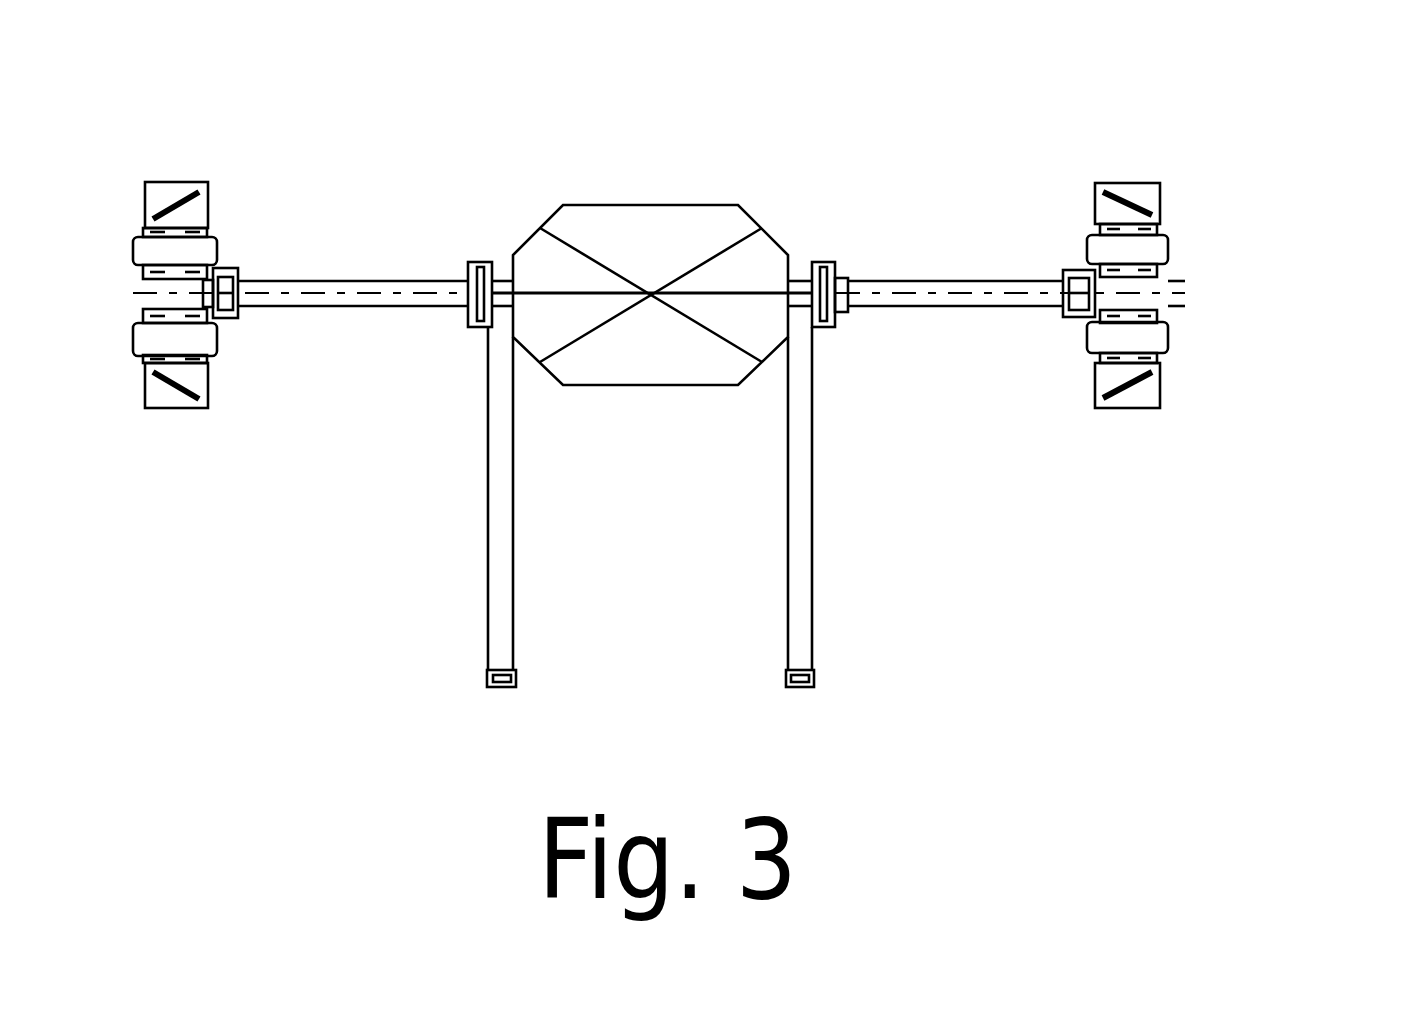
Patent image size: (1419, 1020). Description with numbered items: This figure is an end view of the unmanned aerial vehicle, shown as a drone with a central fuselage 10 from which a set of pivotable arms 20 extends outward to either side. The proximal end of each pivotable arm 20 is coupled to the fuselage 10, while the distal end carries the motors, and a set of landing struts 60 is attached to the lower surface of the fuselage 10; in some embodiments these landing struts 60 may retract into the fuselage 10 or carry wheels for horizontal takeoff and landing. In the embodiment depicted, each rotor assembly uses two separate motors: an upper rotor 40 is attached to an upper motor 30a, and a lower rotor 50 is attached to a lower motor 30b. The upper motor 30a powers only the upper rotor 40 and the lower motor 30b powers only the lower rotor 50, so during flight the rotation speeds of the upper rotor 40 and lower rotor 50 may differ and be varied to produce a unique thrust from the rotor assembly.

The fuselage 10 is at (680, 205).
The pivotable arm 20 is at (980, 293).
The upper motor 30a is at (1230, 247).
The lower motor 30b is at (1242, 359).
The upper rotor 40 is at (170, 182).
The lower rotor 50 is at (170, 408).
The landing struts 60 is at (502, 603).